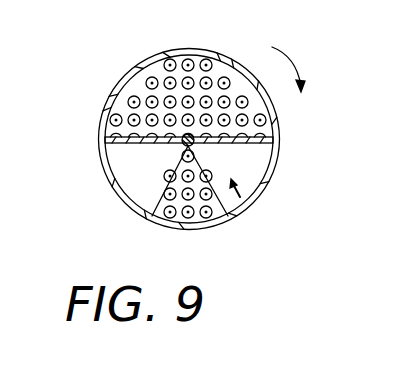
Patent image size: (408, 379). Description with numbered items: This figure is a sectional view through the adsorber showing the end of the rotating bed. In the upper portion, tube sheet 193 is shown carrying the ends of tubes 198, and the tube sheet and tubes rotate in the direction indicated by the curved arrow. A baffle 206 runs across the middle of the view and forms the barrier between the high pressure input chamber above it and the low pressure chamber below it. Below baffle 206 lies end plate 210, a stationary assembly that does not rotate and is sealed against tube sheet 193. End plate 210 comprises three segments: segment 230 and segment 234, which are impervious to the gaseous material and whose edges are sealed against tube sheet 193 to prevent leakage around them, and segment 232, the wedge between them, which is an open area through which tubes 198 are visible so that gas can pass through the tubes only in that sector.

The tube sheet 193 is at (153, 63).
The tubes 198 is at (206, 72).
The baffle 206 is at (106, 141).
The end plate 210 is at (231, 196).
The segment 230 is at (252, 158).
The segment 232 is at (159, 219).
The segment 234 is at (133, 172).